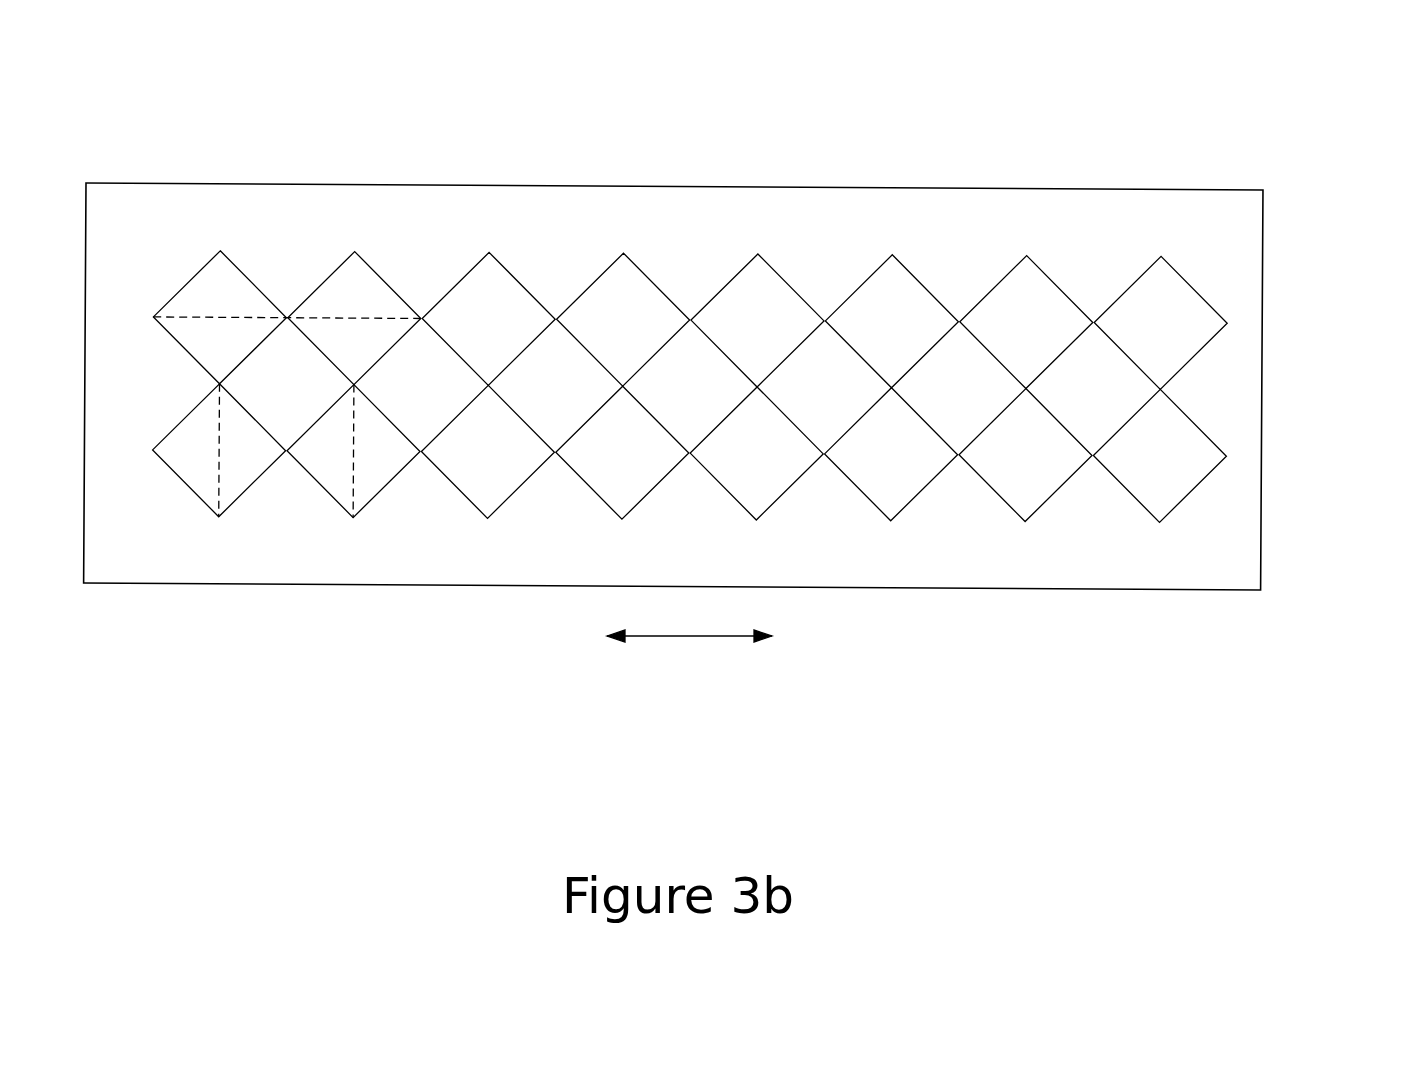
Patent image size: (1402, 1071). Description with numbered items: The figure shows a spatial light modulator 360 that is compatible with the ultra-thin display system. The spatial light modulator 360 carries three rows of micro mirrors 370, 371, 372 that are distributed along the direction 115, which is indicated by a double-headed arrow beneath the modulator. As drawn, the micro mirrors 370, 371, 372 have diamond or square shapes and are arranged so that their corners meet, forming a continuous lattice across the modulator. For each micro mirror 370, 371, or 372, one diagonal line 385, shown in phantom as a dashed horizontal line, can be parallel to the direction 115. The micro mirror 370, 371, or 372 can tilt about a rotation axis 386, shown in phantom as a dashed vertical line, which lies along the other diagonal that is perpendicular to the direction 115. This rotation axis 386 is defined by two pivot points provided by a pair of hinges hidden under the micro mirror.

The spatial light modulator 360 is at (1148, 188).
The micro mirror 370 is at (1215, 288).
The micro mirror 371 is at (1198, 388).
The micro mirror 372 is at (1213, 490).
The diagonal line 385 is at (286, 214).
The rotation axis 386 is at (286, 527).
The direction 115 is at (689, 660).